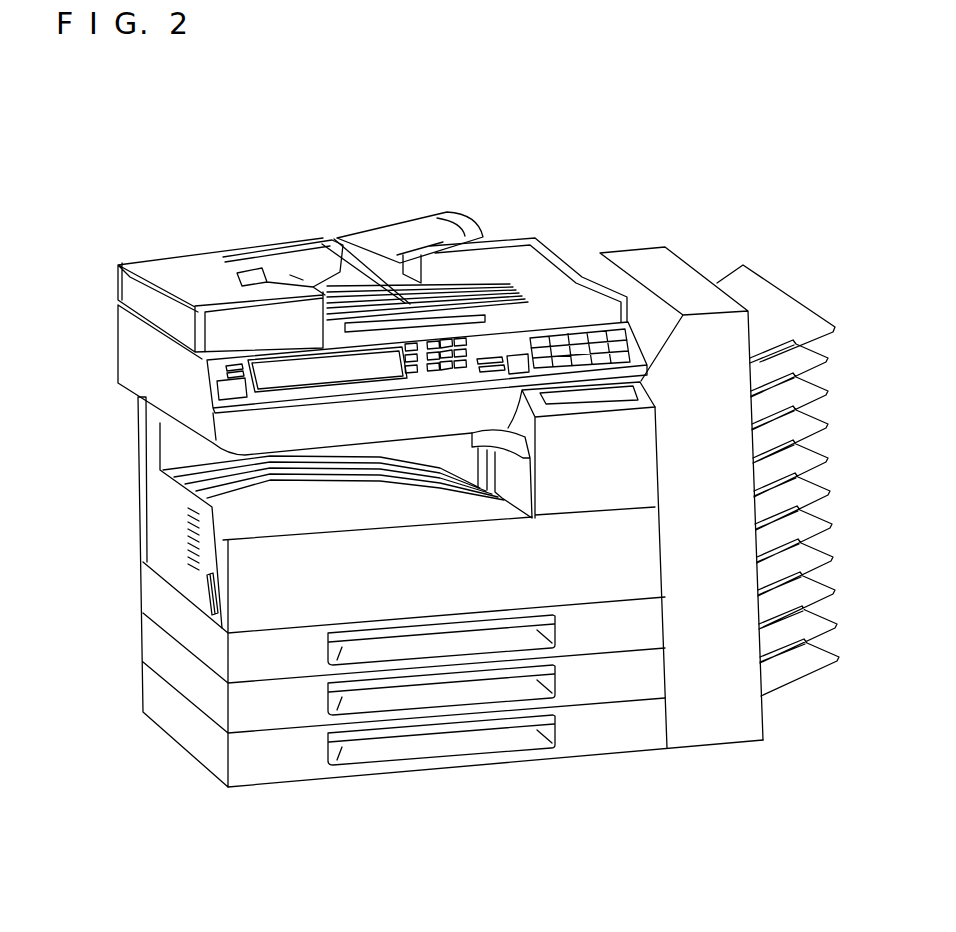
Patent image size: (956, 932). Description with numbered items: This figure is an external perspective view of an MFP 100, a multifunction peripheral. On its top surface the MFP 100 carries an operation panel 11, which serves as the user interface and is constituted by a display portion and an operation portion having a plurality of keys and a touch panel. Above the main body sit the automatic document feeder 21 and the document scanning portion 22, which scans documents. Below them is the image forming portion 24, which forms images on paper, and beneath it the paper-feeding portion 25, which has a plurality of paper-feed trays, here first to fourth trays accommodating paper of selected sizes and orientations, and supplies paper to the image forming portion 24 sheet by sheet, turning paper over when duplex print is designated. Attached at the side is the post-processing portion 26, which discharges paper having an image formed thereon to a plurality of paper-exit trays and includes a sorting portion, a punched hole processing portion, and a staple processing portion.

The MFP 100 is at (148, 140).
The operation panel 11 is at (496, 350).
The automatic document feeder 21 is at (286, 268).
The document scanning portion 22 is at (115, 298).
The image forming portion 24 is at (145, 500).
The paper-feeding portion 25 is at (128, 558).
The post-processing portion 26 is at (646, 262).